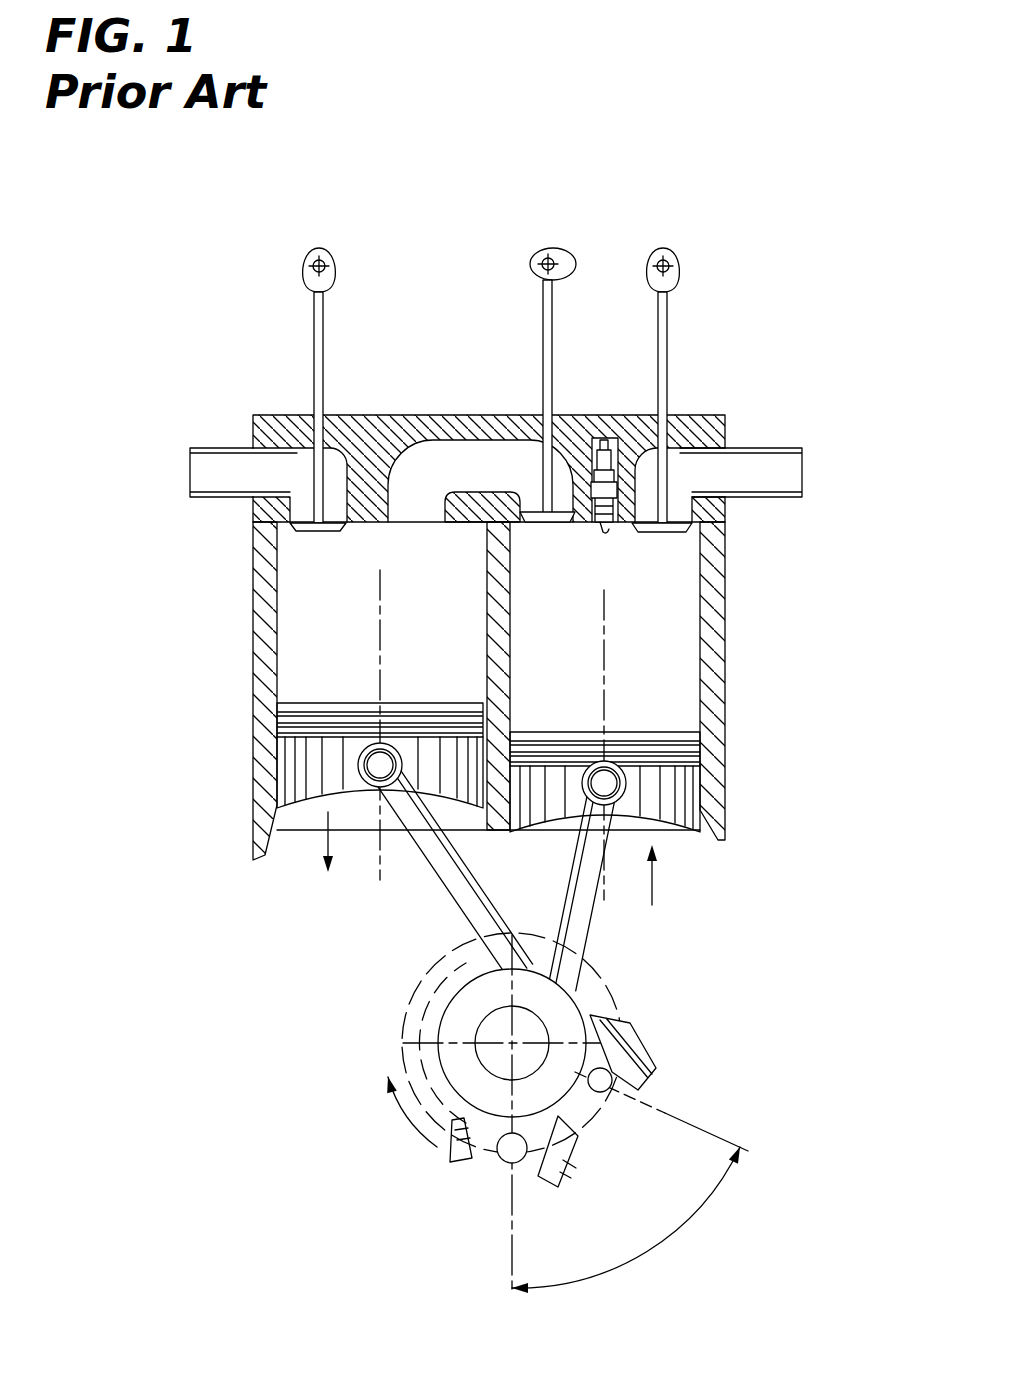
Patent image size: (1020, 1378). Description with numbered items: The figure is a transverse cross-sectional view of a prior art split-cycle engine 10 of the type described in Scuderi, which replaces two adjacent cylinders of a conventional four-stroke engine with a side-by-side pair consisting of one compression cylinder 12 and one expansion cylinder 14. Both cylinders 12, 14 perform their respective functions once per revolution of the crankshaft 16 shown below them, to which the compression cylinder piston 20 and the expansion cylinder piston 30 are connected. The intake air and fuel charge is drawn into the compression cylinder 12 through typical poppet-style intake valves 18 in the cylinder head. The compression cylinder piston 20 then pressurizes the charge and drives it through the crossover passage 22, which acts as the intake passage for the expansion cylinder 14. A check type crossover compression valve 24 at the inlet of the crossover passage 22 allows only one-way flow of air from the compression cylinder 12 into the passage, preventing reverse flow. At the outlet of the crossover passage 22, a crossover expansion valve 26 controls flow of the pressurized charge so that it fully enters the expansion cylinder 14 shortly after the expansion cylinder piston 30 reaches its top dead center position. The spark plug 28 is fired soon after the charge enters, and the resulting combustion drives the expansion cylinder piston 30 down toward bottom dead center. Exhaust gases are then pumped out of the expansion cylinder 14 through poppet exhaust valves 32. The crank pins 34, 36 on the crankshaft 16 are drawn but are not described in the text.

The split-cycle engine 10 is at (778, 335).
The compression cylinder 12 is at (294, 637).
The expansion cylinder 14 is at (706, 602).
The crankshaft 16 is at (498, 1030).
The intake valves 18 is at (313, 320).
The compression cylinder piston 20 is at (300, 790).
The crossover passage 22 is at (476, 440).
The crossover compression (XovrC) valve 24 is at (440, 500).
The crossover expansion (XovrE) valve 26 is at (552, 358).
The spark plug 28 is at (604, 440).
The expansion cylinder piston 30 is at (680, 805).
The exhaust valves 32 is at (668, 340).
The crank pin 34 is at (615, 1082).
The crank pin 36 is at (510, 1155).